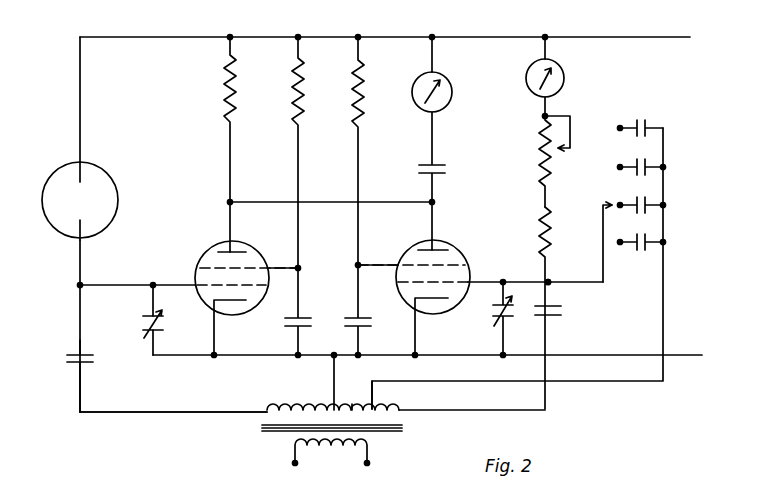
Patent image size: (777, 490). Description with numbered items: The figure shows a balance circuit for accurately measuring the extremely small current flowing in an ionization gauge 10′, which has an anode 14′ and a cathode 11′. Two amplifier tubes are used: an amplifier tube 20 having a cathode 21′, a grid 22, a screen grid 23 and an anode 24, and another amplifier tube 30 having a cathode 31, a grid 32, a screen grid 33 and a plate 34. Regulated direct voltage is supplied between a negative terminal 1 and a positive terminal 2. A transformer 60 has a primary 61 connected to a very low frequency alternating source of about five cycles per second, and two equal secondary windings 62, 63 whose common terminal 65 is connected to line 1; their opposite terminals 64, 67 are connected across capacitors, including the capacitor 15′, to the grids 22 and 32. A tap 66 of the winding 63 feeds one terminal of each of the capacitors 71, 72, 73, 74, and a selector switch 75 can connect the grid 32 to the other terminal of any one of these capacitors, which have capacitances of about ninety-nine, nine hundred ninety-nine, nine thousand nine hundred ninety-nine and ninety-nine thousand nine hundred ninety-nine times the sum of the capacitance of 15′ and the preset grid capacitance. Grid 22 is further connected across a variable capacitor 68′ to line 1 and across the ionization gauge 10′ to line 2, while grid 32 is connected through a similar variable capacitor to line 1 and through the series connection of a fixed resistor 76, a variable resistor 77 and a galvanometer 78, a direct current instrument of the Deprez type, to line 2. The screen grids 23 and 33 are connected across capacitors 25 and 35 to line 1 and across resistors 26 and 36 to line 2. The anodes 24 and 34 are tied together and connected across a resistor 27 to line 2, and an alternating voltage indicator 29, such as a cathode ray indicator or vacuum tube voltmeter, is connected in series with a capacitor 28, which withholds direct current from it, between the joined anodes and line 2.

The negative terminal 1 is at (678, 344).
The positive terminal 2 is at (664, 28).
The ionization gauge 10′ is at (38, 205).
The cathode 11′ is at (80, 235).
The anode 14′ is at (79, 162).
The capacitor 15′ is at (76, 354).
The amplifier tube 20 is at (231, 288).
The cathode 21′ is at (214, 306).
The grid 22 is at (194, 284).
The screen grid 23 is at (264, 266).
The anode 24 is at (228, 250).
The capacitor 25 is at (288, 318).
The resistor 26 is at (296, 120).
The resistor 27 is at (226, 100).
The capacitor 28 is at (444, 168).
The alternating voltage measuring means 29 is at (452, 97).
The amplifier tube 30 is at (431, 284).
The cathode 31 is at (414, 302).
The grid 32 is at (470, 282).
The screen grid 33 is at (396, 266).
The plate 34 is at (438, 248).
The capacitor 35 is at (350, 318).
The resistor 36 is at (360, 126).
The transformer 60 is at (312, 414).
The primary 61 is at (330, 446).
The secondary winding 62 is at (294, 404).
The secondary winding 63 is at (358, 404).
The terminal 64 is at (264, 408).
The common terminal 65 is at (334, 404).
The tap 66 is at (376, 406).
The terminal 67 is at (406, 408).
The variable capacitor 68′ is at (138, 324).
The capacitor 71 is at (654, 242).
The capacitor 72 is at (654, 204).
The capacitor 73 is at (654, 166).
The capacitor 74 is at (654, 126).
The selector switch 75 is at (605, 205).
The fixed resistor 76 is at (544, 232).
The variable resistor 77 is at (544, 146).
The galvanometer 78 is at (566, 82).